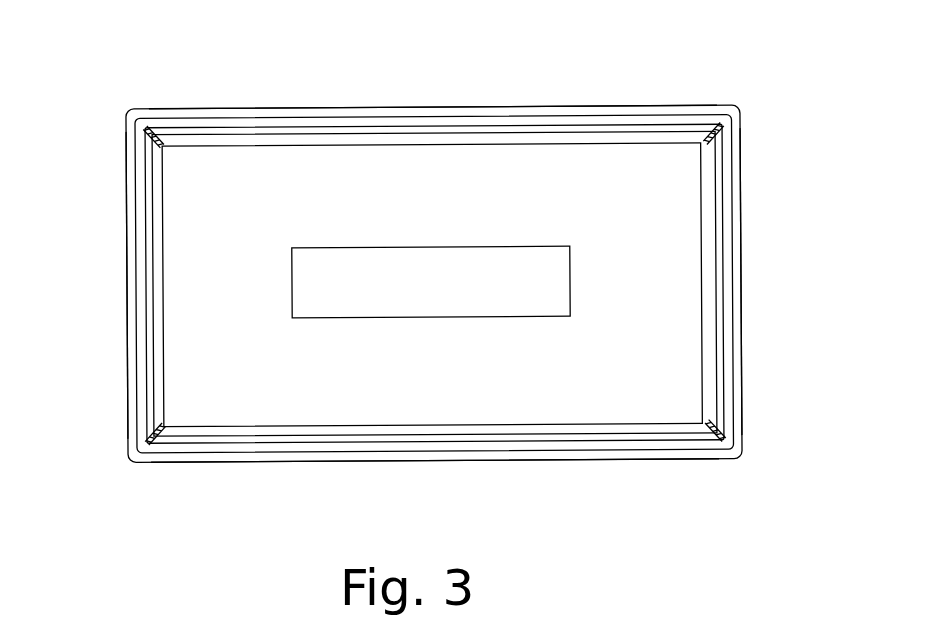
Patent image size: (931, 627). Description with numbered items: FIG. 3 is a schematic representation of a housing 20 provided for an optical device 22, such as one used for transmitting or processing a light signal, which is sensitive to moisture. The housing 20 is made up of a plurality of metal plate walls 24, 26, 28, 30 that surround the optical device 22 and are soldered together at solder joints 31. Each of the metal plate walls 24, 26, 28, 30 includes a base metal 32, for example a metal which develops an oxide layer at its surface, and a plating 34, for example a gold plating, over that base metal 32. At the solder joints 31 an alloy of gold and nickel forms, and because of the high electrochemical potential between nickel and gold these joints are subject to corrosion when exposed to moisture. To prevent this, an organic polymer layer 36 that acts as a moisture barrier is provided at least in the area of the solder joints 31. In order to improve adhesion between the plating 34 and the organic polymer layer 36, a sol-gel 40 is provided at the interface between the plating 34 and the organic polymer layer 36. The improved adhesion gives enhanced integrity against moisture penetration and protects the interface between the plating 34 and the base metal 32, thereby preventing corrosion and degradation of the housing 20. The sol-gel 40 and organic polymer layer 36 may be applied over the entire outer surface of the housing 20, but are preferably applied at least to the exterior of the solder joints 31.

The housing 20 is at (632, 92).
The optical device 22 is at (468, 258).
The metal plate wall 24 is at (318, 105).
The metal plate wall 26 is at (743, 212).
The metal plate wall 28 is at (448, 462).
The metal plate wall 30 is at (125, 295).
The solder joint 31 is at (150, 128).
The base metal 32 is at (478, 133).
The plating 34 is at (385, 127).
The organic polymer layer 36 is at (577, 106).
The sol-gel 40 is at (278, 124).